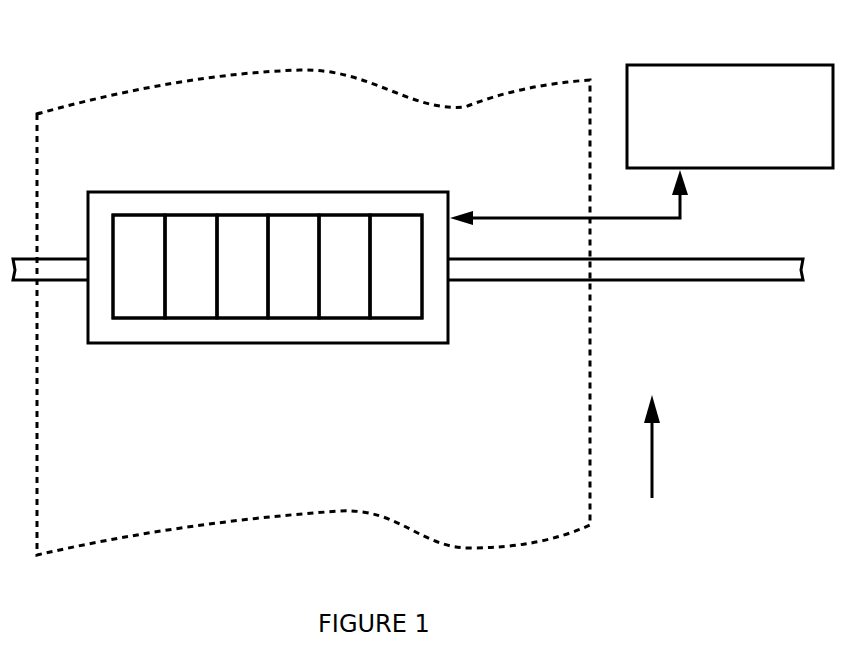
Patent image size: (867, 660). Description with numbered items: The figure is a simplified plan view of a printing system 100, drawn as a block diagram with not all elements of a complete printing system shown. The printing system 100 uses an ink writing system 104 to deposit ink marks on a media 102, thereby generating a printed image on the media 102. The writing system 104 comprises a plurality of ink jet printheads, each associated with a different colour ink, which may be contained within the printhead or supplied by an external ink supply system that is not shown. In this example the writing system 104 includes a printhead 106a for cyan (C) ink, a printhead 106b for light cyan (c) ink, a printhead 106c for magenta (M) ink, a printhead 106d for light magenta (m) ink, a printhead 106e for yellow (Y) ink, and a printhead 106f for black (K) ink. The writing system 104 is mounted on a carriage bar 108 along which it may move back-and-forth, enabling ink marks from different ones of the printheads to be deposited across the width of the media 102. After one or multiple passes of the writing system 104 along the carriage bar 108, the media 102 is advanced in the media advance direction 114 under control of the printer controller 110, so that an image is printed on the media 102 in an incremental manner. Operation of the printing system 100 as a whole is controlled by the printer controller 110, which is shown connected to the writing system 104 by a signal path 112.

The printing system 100 is at (103, 65).
The media 102 is at (515, 102).
The ink writing system 104 is at (138, 192).
The printhead 106a is at (146, 318).
The printhead 106b is at (199, 318).
The printhead 106c is at (256, 318).
The printhead 106d is at (315, 318).
The printhead 106e is at (365, 318).
The printhead 106f is at (413, 318).
The carriage bar 108 is at (705, 258).
The printer controller 110 is at (685, 65).
The control signal connection 112 is at (552, 218).
The media advance direction 114 is at (656, 483).